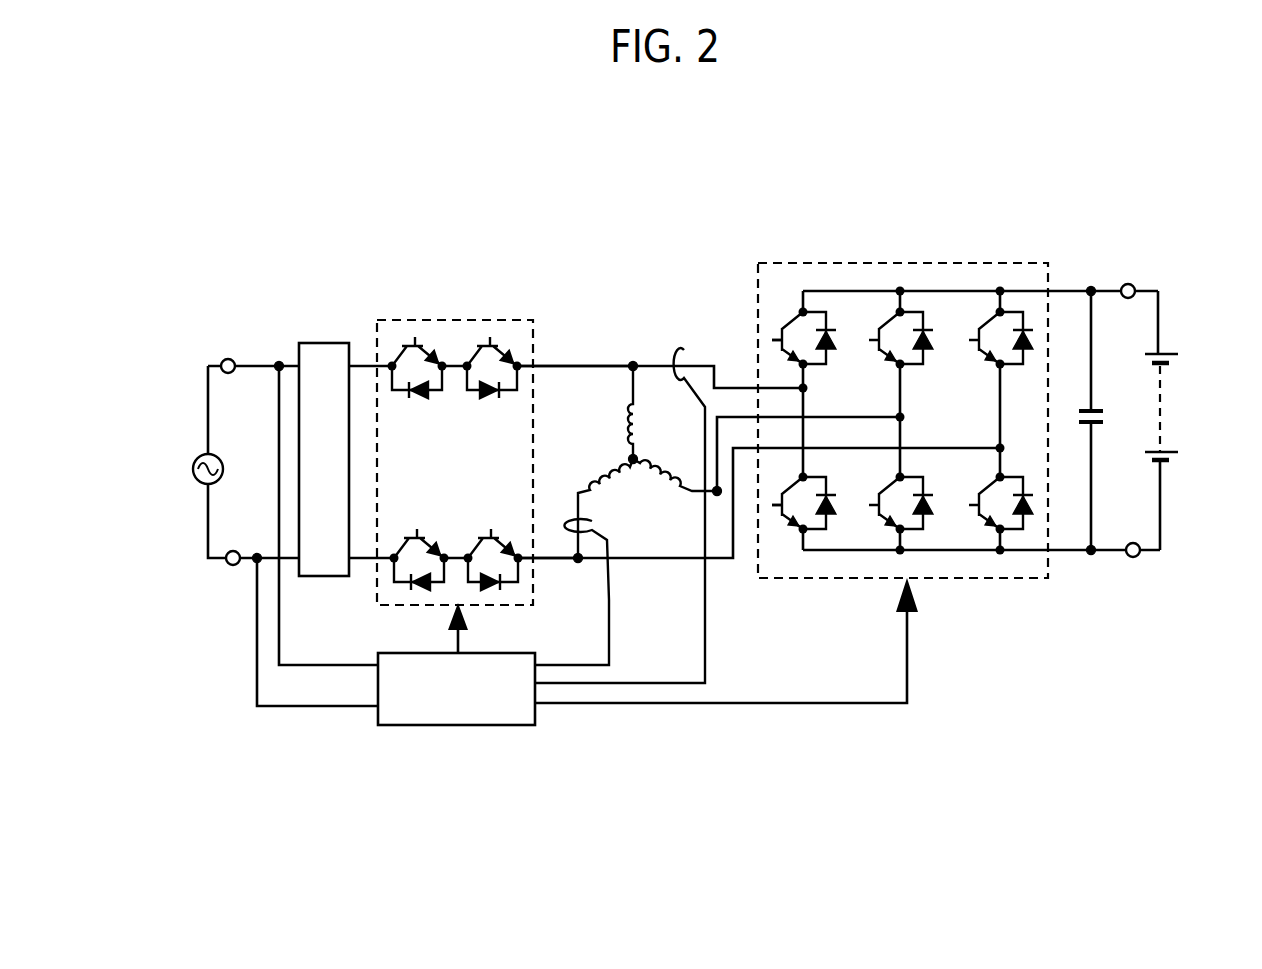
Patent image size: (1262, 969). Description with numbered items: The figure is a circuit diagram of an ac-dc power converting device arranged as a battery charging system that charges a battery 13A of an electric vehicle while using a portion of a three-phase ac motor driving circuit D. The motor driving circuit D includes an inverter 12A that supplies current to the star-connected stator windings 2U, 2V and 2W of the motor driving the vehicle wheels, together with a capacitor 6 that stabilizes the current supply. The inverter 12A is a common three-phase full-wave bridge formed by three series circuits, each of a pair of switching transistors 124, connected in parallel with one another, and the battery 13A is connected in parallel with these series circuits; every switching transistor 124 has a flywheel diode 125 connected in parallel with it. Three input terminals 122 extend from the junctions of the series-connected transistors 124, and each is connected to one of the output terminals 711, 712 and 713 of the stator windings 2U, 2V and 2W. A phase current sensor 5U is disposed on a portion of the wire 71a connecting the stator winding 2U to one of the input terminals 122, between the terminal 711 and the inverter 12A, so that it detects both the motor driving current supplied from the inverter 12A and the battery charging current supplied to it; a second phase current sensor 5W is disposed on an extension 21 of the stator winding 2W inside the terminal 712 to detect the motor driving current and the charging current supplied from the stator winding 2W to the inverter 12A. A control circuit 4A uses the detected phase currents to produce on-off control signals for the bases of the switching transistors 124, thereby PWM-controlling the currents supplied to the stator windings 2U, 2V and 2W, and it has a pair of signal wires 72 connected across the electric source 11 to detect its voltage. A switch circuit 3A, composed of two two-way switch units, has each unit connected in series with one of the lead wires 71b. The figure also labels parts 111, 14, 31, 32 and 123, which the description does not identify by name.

The electric source 11 is at (200, 487).
The input terminal 111 is at (227, 361).
The filter 14 is at (302, 342).
The signal wires 72 is at (287, 710).
The switch circuit 3A is at (413, 365).
The switching element 31 is at (422, 358).
The diode 32 is at (418, 396).
The control circuit 4A is at (450, 727).
The lead wires 71b is at (556, 365).
The extension of stator winding 2W 21 is at (643, 505).
The stator winding 2U is at (630, 402).
The stator winding 2V is at (637, 463).
The stator winding 2W is at (598, 478).
The output terminal 711 is at (633, 363).
The output terminal 712 is at (582, 505).
The output terminal 713 is at (737, 540).
The wire 71a is at (738, 386).
The phase current sensor 5U is at (679, 349).
The phase current sensor 5W is at (597, 532).
The inverter 12A is at (959, 475).
The input terminals 122 is at (808, 387).
The switching transistors 124 is at (778, 340).
The flywheel diode 125 is at (827, 332).
The motor driving circuit D is at (990, 581).
The capacitor 6 is at (1095, 408).
The output terminal 123 is at (1133, 283).
The battery 13A is at (1164, 414).